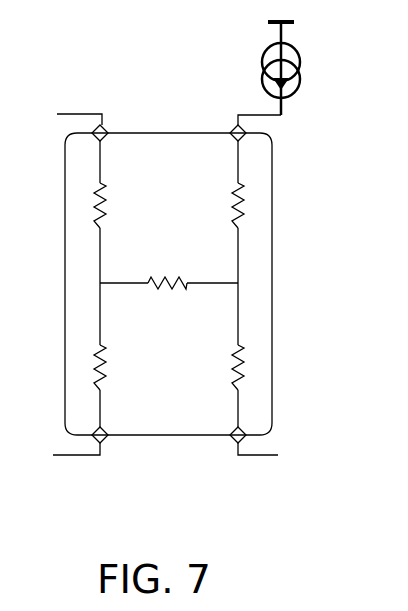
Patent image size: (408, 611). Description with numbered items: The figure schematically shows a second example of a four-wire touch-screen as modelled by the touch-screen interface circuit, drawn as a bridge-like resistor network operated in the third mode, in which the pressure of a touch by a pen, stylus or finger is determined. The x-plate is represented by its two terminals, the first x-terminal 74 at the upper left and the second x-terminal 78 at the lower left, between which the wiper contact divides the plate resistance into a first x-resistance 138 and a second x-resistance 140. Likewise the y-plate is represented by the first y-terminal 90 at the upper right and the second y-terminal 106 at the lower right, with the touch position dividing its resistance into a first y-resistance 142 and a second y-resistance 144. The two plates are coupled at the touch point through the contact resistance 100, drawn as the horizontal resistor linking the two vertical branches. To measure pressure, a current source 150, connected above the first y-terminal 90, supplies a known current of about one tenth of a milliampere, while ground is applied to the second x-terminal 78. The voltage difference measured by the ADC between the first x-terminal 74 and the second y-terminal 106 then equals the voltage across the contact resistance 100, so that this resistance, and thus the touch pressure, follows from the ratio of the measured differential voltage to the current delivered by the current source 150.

The first x-terminal 74 is at (103, 131).
The second x-terminal 78 is at (102, 440).
The first y-terminal 90 is at (233, 128).
The contact resistance 100 is at (162, 270).
The second y-terminal 106 is at (235, 438).
The first x-resistance 138 is at (80, 215).
The second x-resistance 140 is at (82, 380).
The first y-resistance 142 is at (258, 216).
The second y-resistance 144 is at (255, 374).
The current source 150 is at (300, 62).